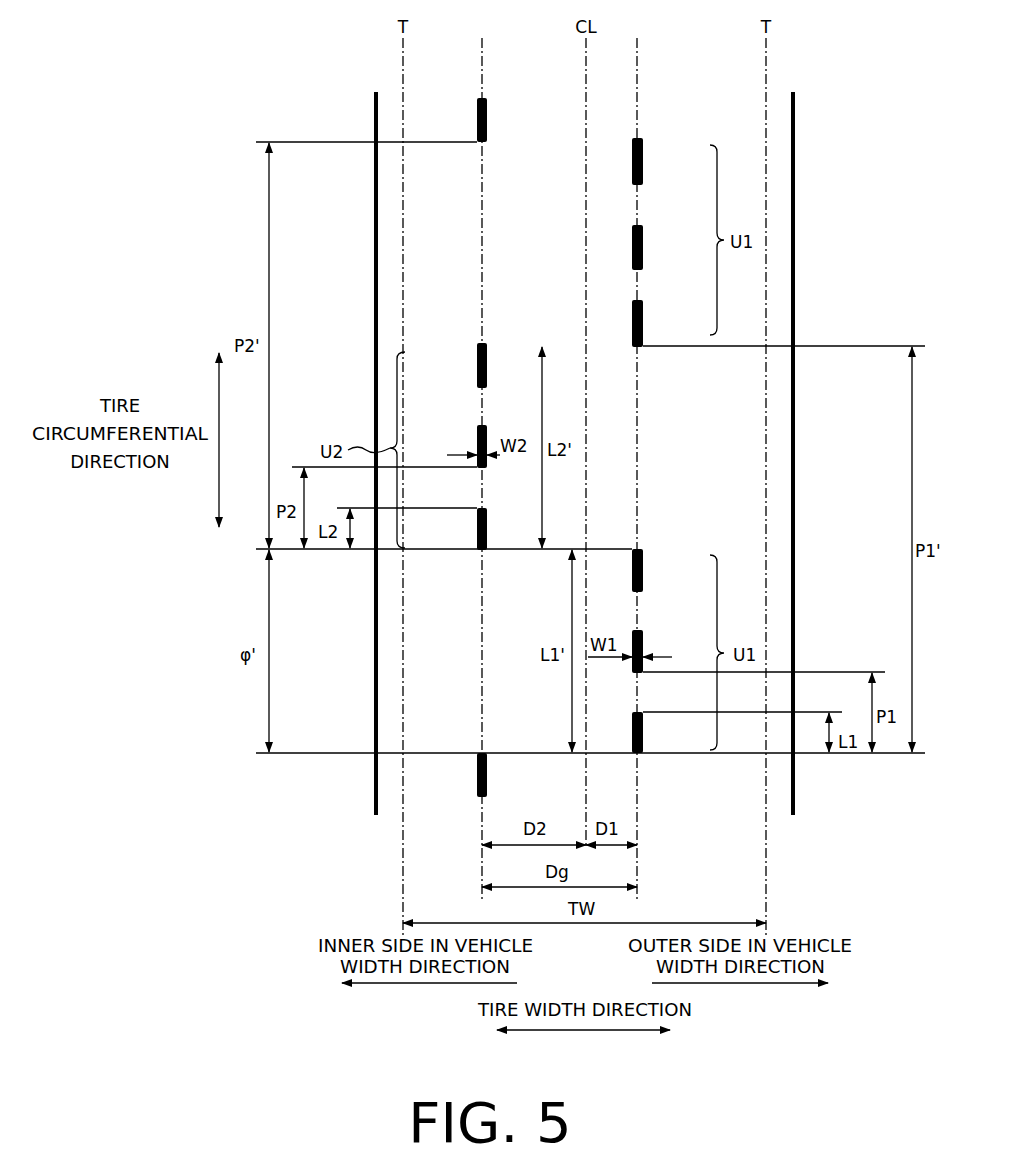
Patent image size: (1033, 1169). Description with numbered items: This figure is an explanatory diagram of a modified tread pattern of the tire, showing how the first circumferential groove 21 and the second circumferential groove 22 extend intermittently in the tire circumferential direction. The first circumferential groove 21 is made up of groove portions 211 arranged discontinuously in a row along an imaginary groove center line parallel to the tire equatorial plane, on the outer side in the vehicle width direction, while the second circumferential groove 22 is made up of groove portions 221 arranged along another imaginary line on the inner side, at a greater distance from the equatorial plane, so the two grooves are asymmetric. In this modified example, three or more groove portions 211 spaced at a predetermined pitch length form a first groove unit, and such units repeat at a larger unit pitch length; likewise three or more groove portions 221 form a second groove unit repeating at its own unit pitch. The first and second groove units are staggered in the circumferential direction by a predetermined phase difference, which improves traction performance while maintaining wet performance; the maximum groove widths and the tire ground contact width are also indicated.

The first circumferential groove 21 is at (645, 86).
The groove portion 211 is at (644, 160).
The second circumferential groove 22 is at (489, 86).
The groove portion 221 is at (477, 125).